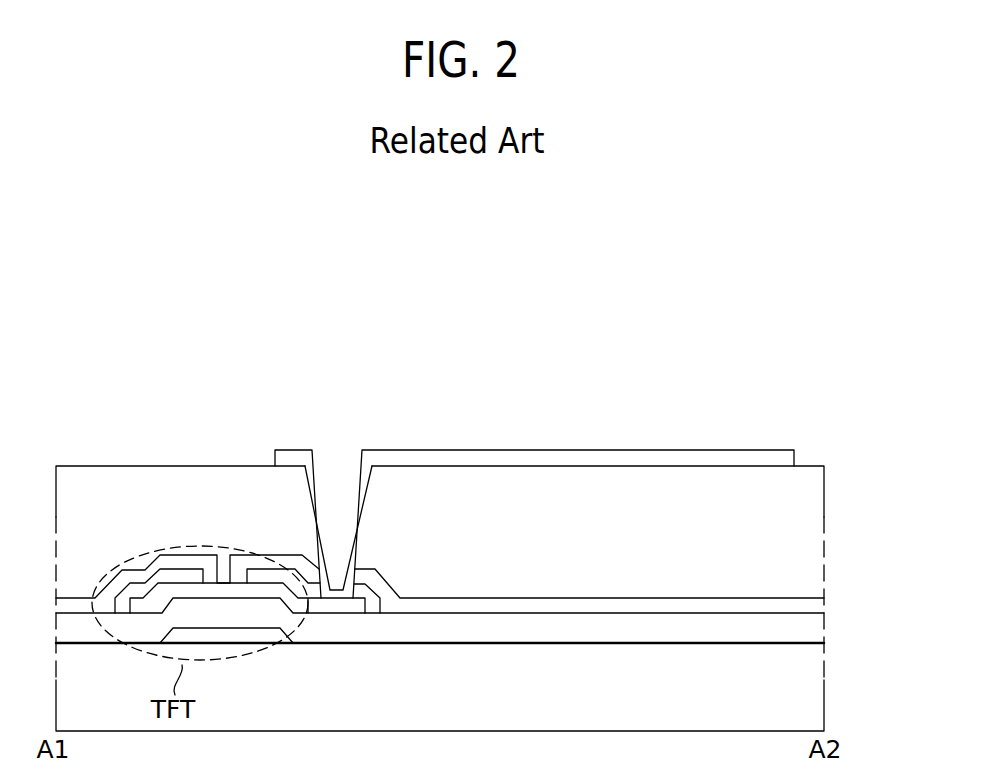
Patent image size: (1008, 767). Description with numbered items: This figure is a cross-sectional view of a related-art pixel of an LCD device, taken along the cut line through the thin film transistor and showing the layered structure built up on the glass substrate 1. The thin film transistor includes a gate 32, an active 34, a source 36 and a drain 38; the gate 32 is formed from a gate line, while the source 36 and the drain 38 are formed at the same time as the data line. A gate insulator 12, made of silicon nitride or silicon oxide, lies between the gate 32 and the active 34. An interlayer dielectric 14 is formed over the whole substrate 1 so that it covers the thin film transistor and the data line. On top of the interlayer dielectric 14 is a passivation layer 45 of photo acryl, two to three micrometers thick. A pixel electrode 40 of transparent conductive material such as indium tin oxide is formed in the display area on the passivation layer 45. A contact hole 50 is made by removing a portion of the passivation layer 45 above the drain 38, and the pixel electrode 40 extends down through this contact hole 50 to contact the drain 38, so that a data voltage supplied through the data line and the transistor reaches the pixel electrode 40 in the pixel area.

The glass substrate 1 is at (824, 684).
The gate insulator 12 is at (824, 628).
The interlayer dielectric 14 is at (824, 603).
The gate 32 is at (232, 636).
The active 34 is at (333, 606).
The source 36 is at (175, 577).
The drain 38 is at (262, 577).
The pixel electrode 40 is at (495, 448).
The passivation layer 45 is at (824, 530).
The contact hole 50 is at (334, 465).